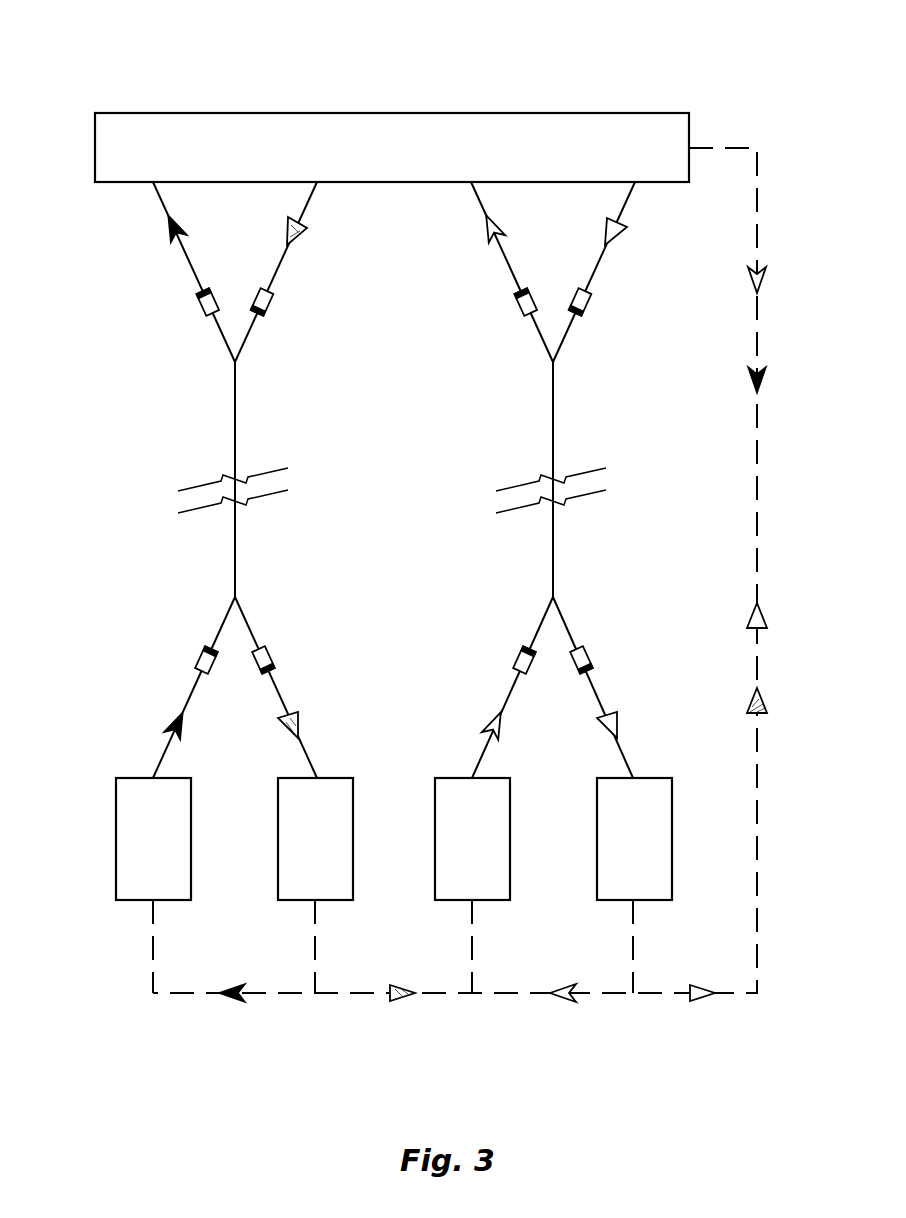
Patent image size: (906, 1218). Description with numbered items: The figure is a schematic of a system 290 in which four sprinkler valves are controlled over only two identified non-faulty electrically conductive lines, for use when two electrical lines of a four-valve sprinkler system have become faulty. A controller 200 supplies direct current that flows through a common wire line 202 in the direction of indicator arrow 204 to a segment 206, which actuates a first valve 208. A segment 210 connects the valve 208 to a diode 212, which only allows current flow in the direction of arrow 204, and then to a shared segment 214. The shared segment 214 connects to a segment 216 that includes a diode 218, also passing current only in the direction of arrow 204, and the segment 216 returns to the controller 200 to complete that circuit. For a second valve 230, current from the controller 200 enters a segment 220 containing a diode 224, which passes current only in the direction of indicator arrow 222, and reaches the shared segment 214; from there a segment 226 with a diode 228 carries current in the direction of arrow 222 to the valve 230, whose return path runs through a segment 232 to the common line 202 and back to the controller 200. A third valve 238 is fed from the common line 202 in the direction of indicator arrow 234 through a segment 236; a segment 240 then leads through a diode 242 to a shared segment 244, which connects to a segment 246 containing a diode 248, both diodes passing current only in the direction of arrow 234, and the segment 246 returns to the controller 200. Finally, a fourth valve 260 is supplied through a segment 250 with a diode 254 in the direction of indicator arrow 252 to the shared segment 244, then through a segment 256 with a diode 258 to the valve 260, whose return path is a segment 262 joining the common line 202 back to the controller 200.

The controller 200 is at (508, 113).
The common wire line 202 is at (725, 148).
The indicator arrow 204 is at (166, 229).
The segment 206 is at (153, 946).
The valve 208 is at (116, 839).
The segment 210 is at (225, 624).
The diode 212 is at (198, 658).
The shared segment 214 is at (233, 414).
The segment 216 is at (222, 346).
The diode 218 is at (197, 304).
The segment 220 is at (248, 343).
The indicator arrow 222 is at (302, 232).
The diode 224 is at (275, 302).
The segment 226 is at (248, 622).
The diode 228 is at (275, 655).
The valve 230 is at (278, 839).
The segment 232 is at (315, 946).
The indicator arrow 234 is at (483, 229).
The segment 236 is at (472, 945).
The valve 238 is at (510, 838).
The segment 240 is at (543, 624).
The diode 242 is at (515, 658).
The shared segment 244 is at (555, 414).
The segment 246 is at (540, 346).
The diode 248 is at (515, 304).
The segment 250 is at (568, 343).
The indicator arrow 252 is at (622, 233).
The diode 254 is at (593, 302).
The segment 256 is at (567, 622).
The diode 258 is at (593, 655).
The valve 260 is at (672, 838).
The segment 262 is at (633, 945).
The system 290 is at (737, 50).